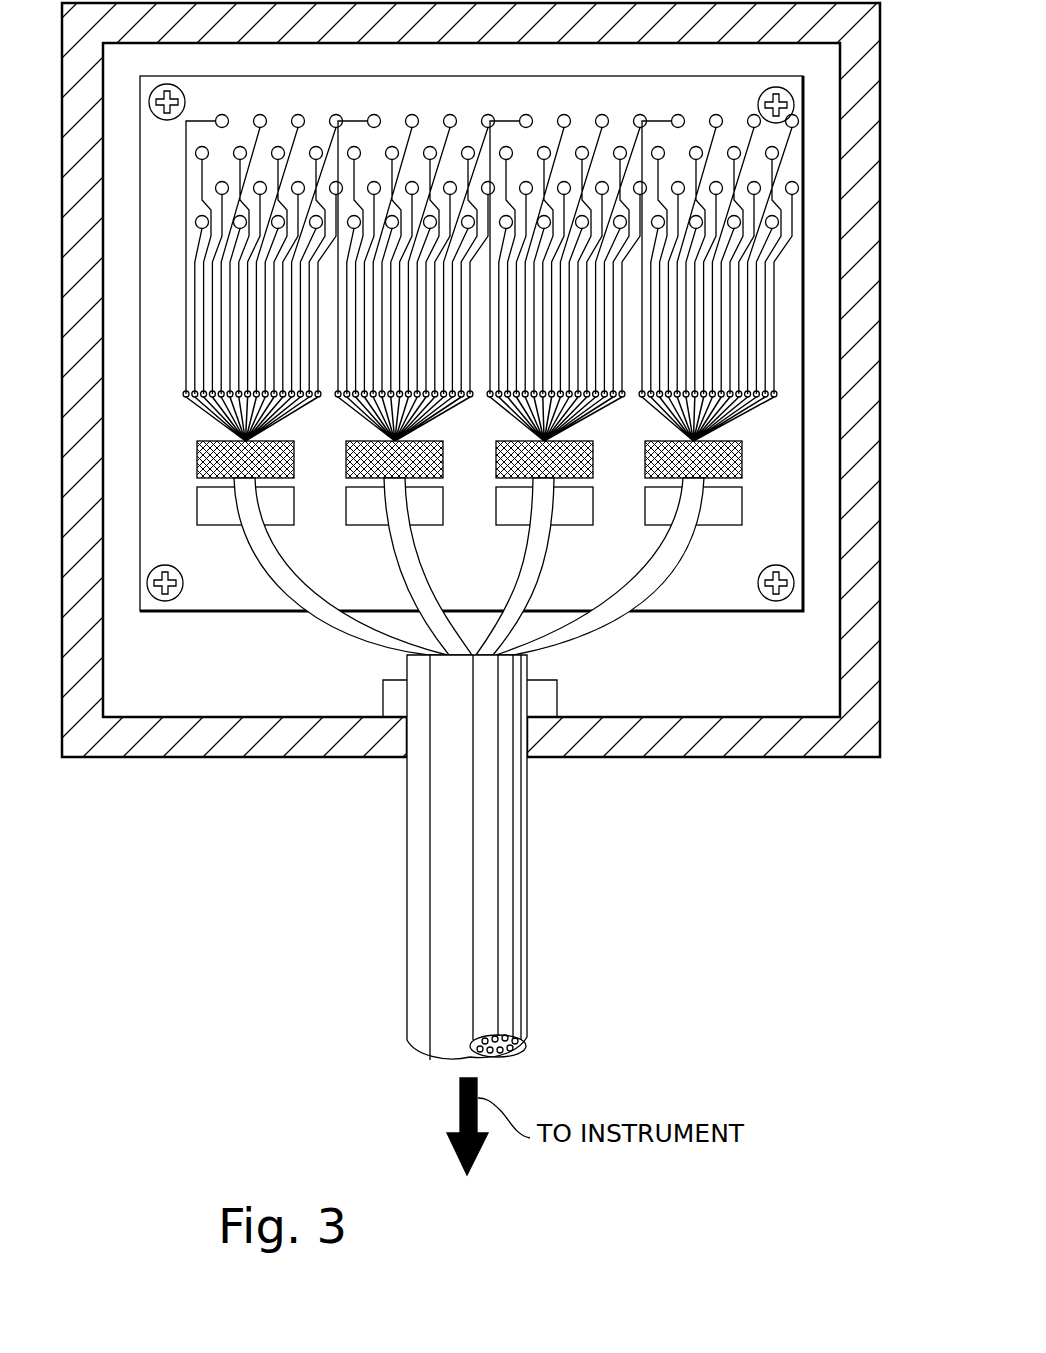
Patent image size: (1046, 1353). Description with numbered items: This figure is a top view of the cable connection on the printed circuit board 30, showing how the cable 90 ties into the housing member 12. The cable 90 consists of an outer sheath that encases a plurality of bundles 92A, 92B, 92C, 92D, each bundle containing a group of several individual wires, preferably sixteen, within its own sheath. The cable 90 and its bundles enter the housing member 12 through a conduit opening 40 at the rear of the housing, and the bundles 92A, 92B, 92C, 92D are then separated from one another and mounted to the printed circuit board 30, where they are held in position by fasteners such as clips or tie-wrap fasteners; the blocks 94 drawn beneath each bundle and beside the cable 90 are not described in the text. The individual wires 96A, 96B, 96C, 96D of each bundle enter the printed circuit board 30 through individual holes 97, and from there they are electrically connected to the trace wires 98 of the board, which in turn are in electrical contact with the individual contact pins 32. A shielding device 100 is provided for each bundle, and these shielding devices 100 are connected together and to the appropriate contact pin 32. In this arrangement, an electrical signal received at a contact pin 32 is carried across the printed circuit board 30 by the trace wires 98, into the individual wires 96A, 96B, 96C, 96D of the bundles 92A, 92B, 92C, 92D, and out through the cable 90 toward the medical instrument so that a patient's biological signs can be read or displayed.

The housing member 12 is at (892, 248).
The printed circuit board 30 is at (790, 408).
The contact pins 32 is at (286, 100).
The trace wires 98 is at (172, 287).
The holes 97 is at (170, 394).
The individual wires 96A is at (186, 425).
The individual wires 96B is at (313, 410).
The individual wires 96C is at (468, 408).
The individual wires 96D is at (755, 434).
The shielding device 100 is at (294, 455).
The strain relief block 94 is at (205, 527).
The bundle 92A is at (388, 637).
The bundle 92B is at (402, 592).
The bundle 92C is at (545, 550).
The bundle 92D is at (547, 624).
The conduit opening 40 is at (405, 760).
The cable 90 is at (407, 930).